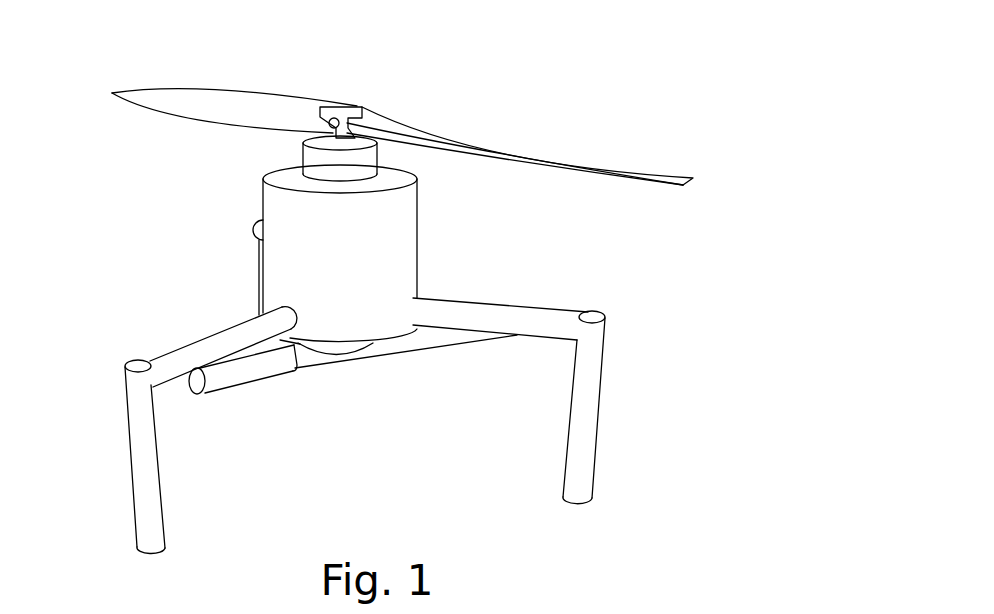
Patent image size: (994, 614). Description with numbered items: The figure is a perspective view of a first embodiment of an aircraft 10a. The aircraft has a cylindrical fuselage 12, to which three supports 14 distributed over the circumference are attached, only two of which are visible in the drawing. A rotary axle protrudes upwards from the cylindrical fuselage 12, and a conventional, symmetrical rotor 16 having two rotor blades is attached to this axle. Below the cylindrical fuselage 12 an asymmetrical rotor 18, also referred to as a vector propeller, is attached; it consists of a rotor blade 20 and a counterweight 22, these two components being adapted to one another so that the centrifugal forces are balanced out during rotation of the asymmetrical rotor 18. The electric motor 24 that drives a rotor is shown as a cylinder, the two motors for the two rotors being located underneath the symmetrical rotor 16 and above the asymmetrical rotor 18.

The aircraft 10a is at (586, 60).
The cylindrical fuselage 12 is at (402, 257).
The supports 14 is at (148, 483).
The symmetrical rotor 16 is at (398, 88).
The asymmetrical rotor 18 is at (421, 422).
The rotor blade 20 is at (440, 335).
The counterweight 22 is at (248, 368).
The electric motor 24 is at (308, 158).